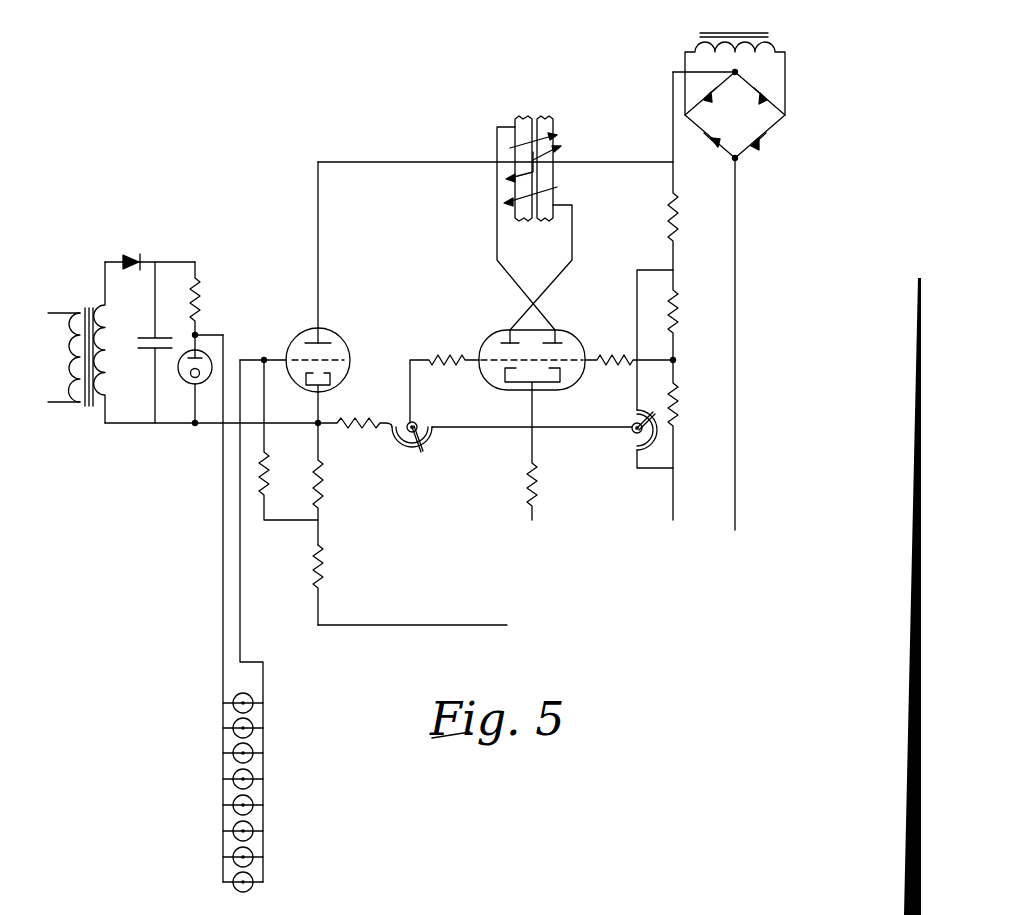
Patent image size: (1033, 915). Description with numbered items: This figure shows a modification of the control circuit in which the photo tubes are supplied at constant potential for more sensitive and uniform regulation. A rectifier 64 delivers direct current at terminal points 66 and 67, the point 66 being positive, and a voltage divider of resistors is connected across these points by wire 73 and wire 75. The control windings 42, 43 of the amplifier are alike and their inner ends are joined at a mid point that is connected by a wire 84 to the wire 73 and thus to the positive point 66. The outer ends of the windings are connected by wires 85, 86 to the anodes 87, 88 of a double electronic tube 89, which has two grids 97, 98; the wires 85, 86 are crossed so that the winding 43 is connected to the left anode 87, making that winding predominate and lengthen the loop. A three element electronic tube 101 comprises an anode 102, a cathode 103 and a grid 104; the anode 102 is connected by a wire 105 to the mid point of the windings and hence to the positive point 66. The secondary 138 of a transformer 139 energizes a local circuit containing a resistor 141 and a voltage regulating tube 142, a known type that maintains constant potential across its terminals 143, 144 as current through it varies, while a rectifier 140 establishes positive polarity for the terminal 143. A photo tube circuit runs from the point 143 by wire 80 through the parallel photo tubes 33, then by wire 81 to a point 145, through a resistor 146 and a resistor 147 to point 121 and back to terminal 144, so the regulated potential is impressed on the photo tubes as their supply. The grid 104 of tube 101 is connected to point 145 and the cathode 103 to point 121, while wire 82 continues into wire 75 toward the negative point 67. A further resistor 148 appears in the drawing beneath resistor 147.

The photo tubes 33 is at (253, 703).
The control winding 42 is at (556, 138).
The control winding 43 is at (552, 192).
The rectifier 64 is at (735, 95).
The terminal point 66 is at (736, 72).
The terminal point 67 is at (740, 157).
The wire 73 is at (671, 134).
The wire 75 is at (738, 447).
The wire 80 is at (222, 629).
The wire 81 is at (241, 629).
The wire 82 is at (420, 624).
The wire 84 is at (658, 164).
The wire 85 is at (512, 278).
The wire 86 is at (560, 279).
The anode 87 is at (497, 334).
The anode 88 is at (560, 330).
The double electronic tube 89 is at (580, 340).
The grid 97 is at (470, 380).
The grid 98 is at (584, 377).
The three element electronic tube 101 is at (345, 340).
The anode 102 is at (321, 340).
The cathode 103 is at (306, 388).
The grid 104 is at (340, 362).
The wire 105 is at (320, 254).
The point 121 is at (321, 421).
The secondary 138 is at (100, 373).
The transformer 139 is at (86, 402).
The rectifier 140 is at (132, 258).
The resistor 141 is at (201, 291).
The voltage regulating tube 142 is at (185, 378).
The terminal 143 is at (200, 333).
The terminal 144 is at (194, 428).
The point 145 is at (264, 359).
The resistor 146 is at (269, 457).
The resistor 147 is at (325, 466).
The resistor 148 is at (325, 558).